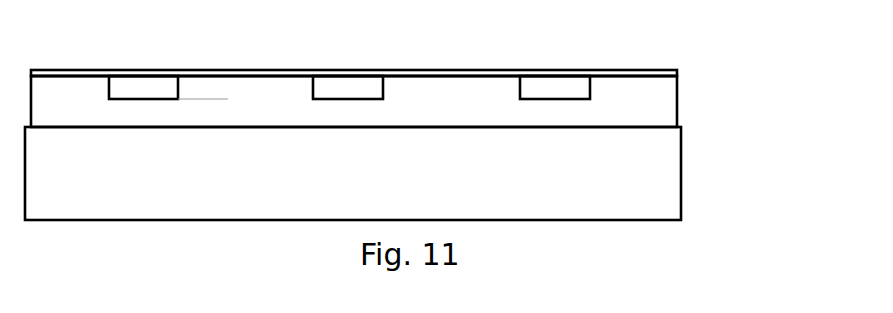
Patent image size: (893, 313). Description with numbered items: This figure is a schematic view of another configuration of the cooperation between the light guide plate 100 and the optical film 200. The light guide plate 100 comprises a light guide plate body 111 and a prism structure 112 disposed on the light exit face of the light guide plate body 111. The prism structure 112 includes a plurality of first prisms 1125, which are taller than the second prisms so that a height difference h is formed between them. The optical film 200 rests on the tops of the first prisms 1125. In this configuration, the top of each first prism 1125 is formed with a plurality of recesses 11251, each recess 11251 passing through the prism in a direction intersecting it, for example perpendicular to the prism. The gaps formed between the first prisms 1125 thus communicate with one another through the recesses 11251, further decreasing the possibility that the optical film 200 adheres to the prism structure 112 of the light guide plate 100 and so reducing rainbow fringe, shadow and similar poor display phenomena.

The light guide plate 100 is at (400, 126).
The light guide plate body 111 is at (672, 173).
The prism structure 112 is at (382, 80).
The first prism 1125 is at (453, 92).
The recess 11251 is at (349, 89).
The optical film 200 is at (680, 71).
The height difference h is at (216, 77).